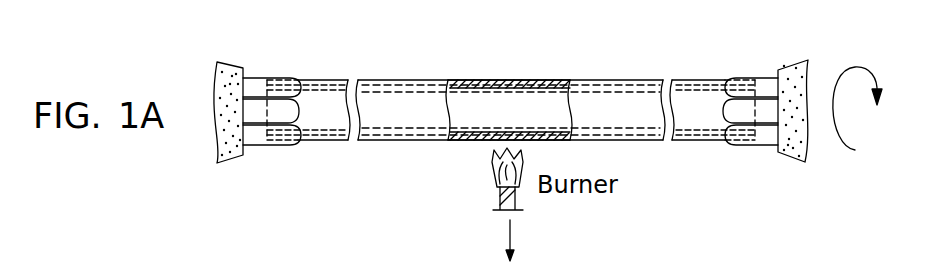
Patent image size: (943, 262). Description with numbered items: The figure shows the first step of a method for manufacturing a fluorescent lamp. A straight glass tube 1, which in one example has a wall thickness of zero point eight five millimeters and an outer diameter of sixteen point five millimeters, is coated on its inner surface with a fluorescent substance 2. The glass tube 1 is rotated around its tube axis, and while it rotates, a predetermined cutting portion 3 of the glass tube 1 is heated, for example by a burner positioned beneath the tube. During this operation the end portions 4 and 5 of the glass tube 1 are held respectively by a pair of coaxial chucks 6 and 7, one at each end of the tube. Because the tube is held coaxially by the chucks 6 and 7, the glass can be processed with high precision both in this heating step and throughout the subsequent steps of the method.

The straight glass tube 1 is at (405, 80).
The fluorescent substance 2 is at (489, 76).
The predetermined cutting portion 3 is at (538, 80).
The end portion 4 is at (318, 80).
The end portion 5 is at (693, 80).
The chuck 6 is at (233, 68).
The chuck 7 is at (785, 68).